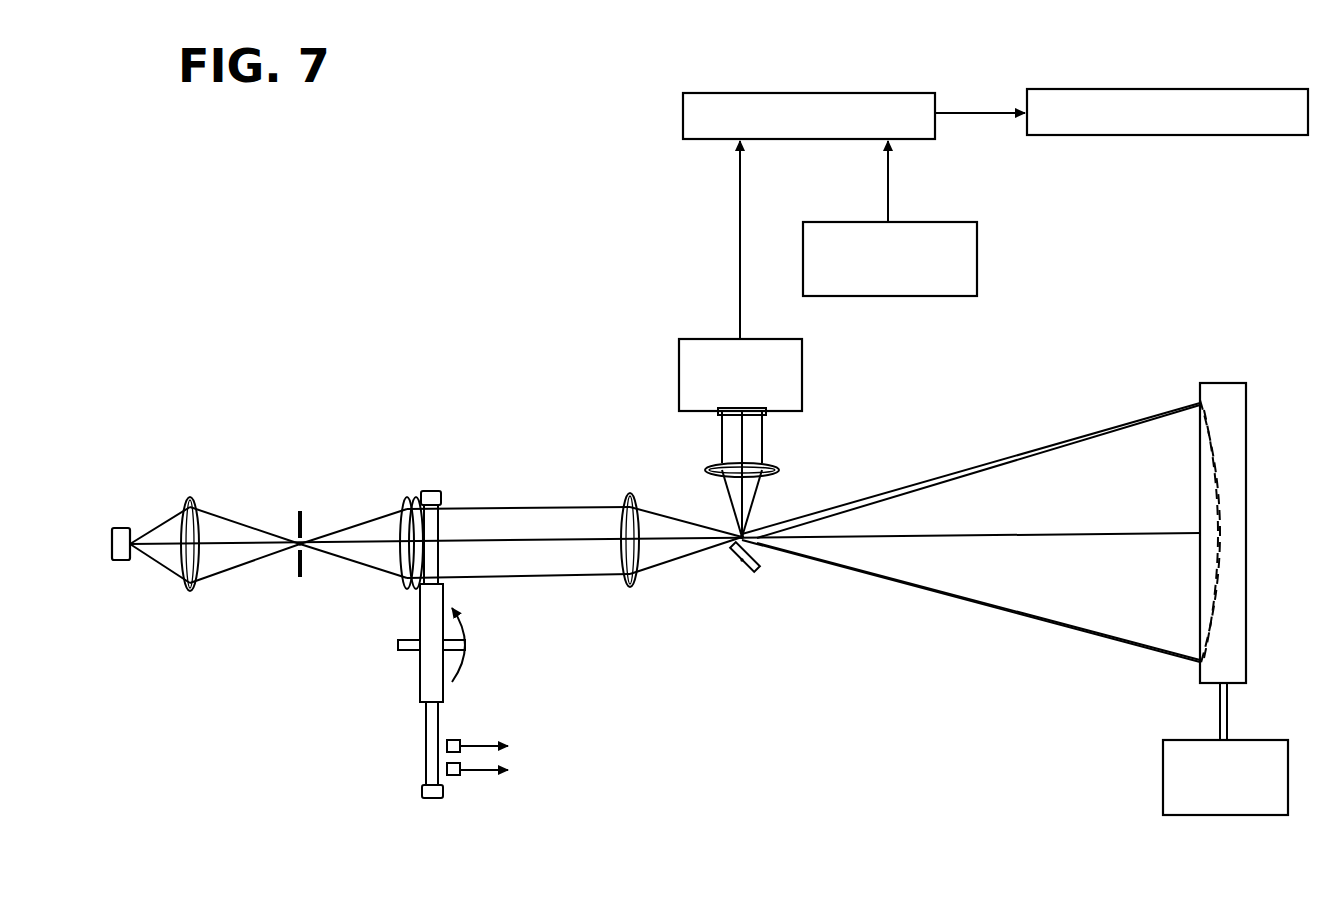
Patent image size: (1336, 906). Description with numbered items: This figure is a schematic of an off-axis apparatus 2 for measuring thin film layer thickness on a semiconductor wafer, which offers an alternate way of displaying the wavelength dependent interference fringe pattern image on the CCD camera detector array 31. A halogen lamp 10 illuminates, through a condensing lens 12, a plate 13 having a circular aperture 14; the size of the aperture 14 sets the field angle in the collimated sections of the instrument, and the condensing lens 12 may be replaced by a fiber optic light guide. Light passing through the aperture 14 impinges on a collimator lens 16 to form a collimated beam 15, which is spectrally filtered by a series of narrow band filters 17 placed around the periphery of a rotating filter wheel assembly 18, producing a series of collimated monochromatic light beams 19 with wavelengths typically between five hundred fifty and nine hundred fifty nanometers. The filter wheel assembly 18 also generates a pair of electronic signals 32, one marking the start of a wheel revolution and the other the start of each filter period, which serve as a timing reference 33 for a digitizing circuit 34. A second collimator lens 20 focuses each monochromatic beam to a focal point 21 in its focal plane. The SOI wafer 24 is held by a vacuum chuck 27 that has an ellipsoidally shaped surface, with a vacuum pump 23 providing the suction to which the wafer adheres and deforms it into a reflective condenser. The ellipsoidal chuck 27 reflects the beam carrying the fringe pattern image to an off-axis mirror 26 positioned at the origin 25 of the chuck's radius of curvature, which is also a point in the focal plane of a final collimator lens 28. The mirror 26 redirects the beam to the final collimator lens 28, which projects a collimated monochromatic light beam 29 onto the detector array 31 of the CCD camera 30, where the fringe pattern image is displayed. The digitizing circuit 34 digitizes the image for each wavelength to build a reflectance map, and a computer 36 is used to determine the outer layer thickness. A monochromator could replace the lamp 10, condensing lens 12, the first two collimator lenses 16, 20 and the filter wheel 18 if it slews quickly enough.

The apparatus 2 is at (354, 410).
The halogen lamp 10 is at (122, 562).
The condensing lens 12 is at (186, 500).
The plate 13 is at (297, 515).
The circular aperture 14 is at (296, 550).
The collimated beam 15 is at (420, 588).
The collimator lens 16 is at (405, 500).
The narrow band filters 17 is at (440, 548).
The rotating filter wheel assembly 18 is at (430, 672).
The collimated monochromatic light beams 19 is at (488, 524).
The second collimator lens 20 is at (626, 584).
The focal point 21 is at (748, 534).
The vacuum pump 23 is at (1250, 740).
The SOI wafer 24 is at (1220, 470).
The origin 25 is at (757, 556).
The off-axis mirror 26 is at (740, 563).
The vacuum chuck 27 is at (1228, 382).
The final collimator lens 28 is at (716, 477).
The collimated monochromatic light beam 29 is at (764, 438).
The CCD camera 30 is at (716, 338).
The CCD camera detector array 31 is at (716, 414).
The electronic signals 32 is at (478, 745).
The timing reference 33 is at (920, 222).
The digitizing circuit 34 is at (870, 92).
The computer 36 is at (1243, 88).